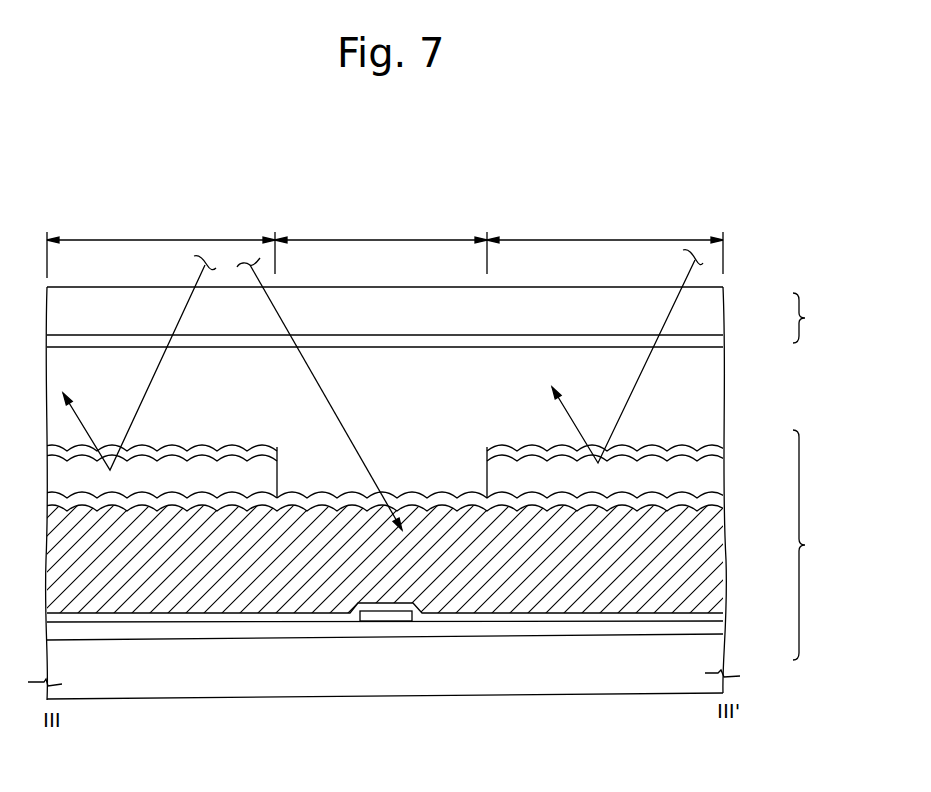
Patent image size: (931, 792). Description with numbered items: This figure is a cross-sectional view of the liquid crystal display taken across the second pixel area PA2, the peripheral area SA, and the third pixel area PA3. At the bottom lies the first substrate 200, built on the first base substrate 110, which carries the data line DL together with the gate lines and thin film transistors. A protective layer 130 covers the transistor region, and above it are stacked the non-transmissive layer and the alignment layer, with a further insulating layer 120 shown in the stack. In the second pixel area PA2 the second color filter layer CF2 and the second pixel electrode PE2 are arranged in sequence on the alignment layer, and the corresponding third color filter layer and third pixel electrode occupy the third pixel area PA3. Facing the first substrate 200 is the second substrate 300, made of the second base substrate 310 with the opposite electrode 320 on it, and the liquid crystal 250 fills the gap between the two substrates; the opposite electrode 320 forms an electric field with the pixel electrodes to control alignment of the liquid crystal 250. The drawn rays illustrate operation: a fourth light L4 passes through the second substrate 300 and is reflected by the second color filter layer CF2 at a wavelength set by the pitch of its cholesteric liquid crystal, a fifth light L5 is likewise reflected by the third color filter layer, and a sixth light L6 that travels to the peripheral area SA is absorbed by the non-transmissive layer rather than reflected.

The second base substrate 310 is at (708, 304).
The opposite electrode 320 is at (708, 337).
The second substrate 300 is at (818, 318).
The liquid crystal 250 is at (708, 390).
The second pixel electrode PE2 is at (253, 447).
The second color filter layer CF2 is at (268, 475).
The first substrate 200 is at (818, 545).
The protective layer 130 is at (715, 612).
The gate insulating layer 120 is at (715, 629).
The first base substrate 110 is at (707, 660).
The data line DL is at (388, 621).
The fourth light L4 is at (148, 382).
The fifth light L5 is at (643, 365).
The sixth light L6 is at (318, 381).
The second pixel area PA2 is at (161, 246).
The peripheral area SA is at (381, 244).
The third pixel area PA3 is at (605, 244).